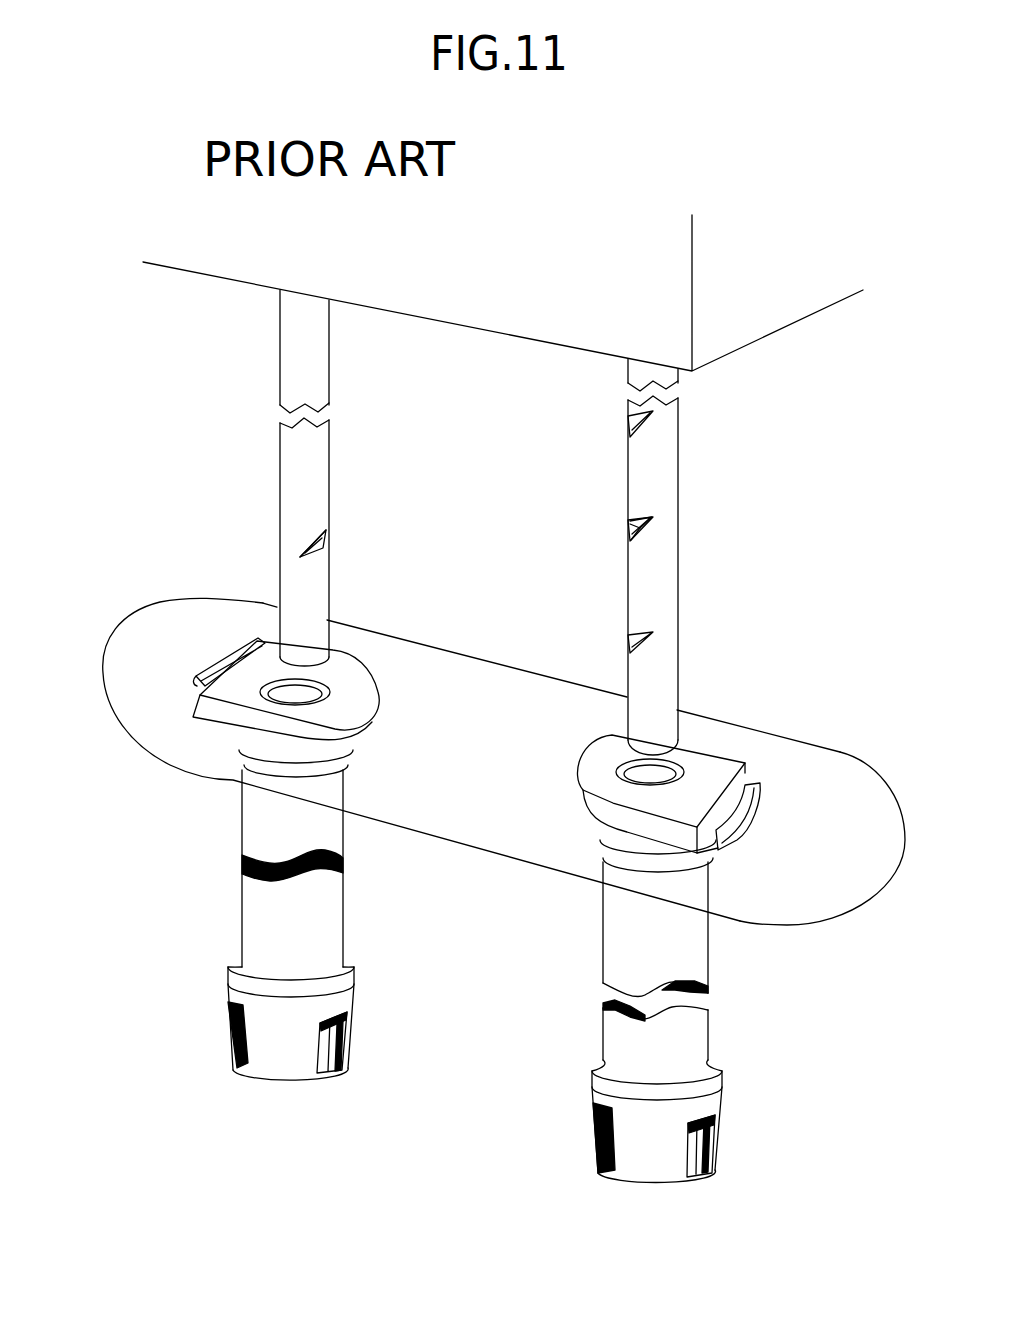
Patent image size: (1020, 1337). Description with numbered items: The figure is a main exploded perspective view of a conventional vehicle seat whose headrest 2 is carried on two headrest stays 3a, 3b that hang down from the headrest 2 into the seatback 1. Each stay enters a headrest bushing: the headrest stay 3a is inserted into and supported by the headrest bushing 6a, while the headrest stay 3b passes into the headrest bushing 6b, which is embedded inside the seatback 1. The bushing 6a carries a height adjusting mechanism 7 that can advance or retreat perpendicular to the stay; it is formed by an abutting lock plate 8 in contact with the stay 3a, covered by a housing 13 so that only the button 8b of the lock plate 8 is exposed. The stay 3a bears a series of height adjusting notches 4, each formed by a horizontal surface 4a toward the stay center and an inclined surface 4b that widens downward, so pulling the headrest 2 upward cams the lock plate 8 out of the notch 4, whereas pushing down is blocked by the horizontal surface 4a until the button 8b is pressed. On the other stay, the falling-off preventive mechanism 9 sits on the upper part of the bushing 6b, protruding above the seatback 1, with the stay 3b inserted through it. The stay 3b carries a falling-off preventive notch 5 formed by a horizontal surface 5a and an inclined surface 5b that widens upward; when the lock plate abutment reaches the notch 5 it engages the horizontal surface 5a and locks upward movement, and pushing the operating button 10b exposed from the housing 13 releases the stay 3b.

The seatback 1 is at (205, 600).
The headrest 2 is at (443, 318).
The headrest stay 3a is at (657, 458).
The headrest stay 3b is at (305, 462).
The height adjusting notch 4 is at (632, 423).
The horizontal surface 4a is at (628, 517).
The inclined surface 4b is at (628, 527).
The falling-off preventive notch 5 is at (394, 520).
The horizontal surface 5a is at (330, 548).
The inclined surface 5b is at (328, 535).
The headrest bushing 6a is at (643, 923).
The headrest bushing 6b is at (273, 808).
The height adjusting mechanism 7 is at (680, 733).
The abutting lock plate 8 is at (750, 775).
The button 8b is at (737, 817).
The falling-off preventive mechanism 9 is at (173, 702).
The operating button 10b is at (200, 650).
The housing 13 is at (240, 693).